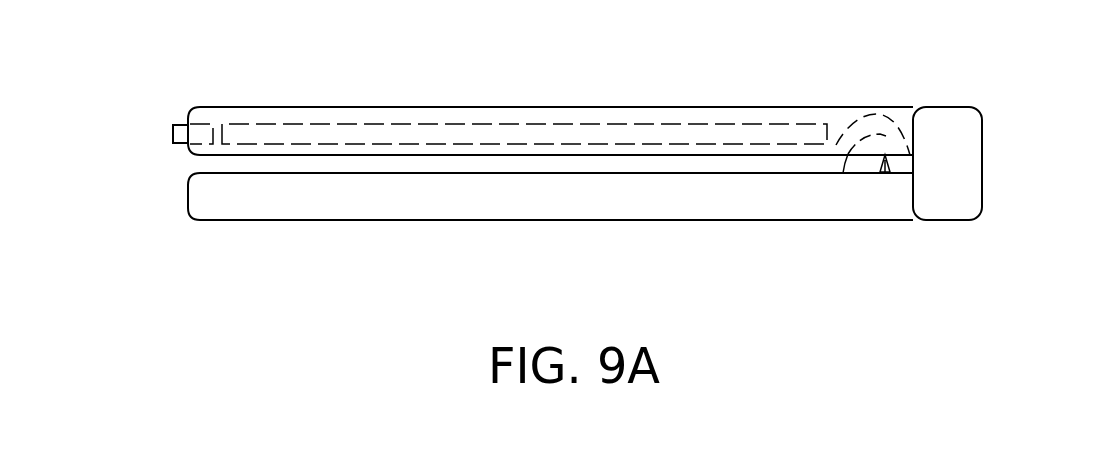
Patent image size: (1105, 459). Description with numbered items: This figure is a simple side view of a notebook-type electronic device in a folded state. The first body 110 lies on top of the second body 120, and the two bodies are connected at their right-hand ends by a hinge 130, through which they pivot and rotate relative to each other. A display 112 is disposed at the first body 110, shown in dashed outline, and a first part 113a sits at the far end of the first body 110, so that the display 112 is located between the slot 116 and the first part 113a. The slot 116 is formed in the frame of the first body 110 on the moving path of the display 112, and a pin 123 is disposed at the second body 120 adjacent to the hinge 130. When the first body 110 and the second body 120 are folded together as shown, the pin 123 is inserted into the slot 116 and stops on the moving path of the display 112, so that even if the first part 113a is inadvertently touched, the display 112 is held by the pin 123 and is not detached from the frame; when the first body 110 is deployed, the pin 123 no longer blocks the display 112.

The first body 110 is at (605, 107).
The display 112 is at (393, 132).
The first part 113a is at (173, 134).
The slot 116 is at (888, 178).
The second body 120 is at (612, 195).
The pin 123 is at (836, 145).
The hinge 130 is at (950, 137).